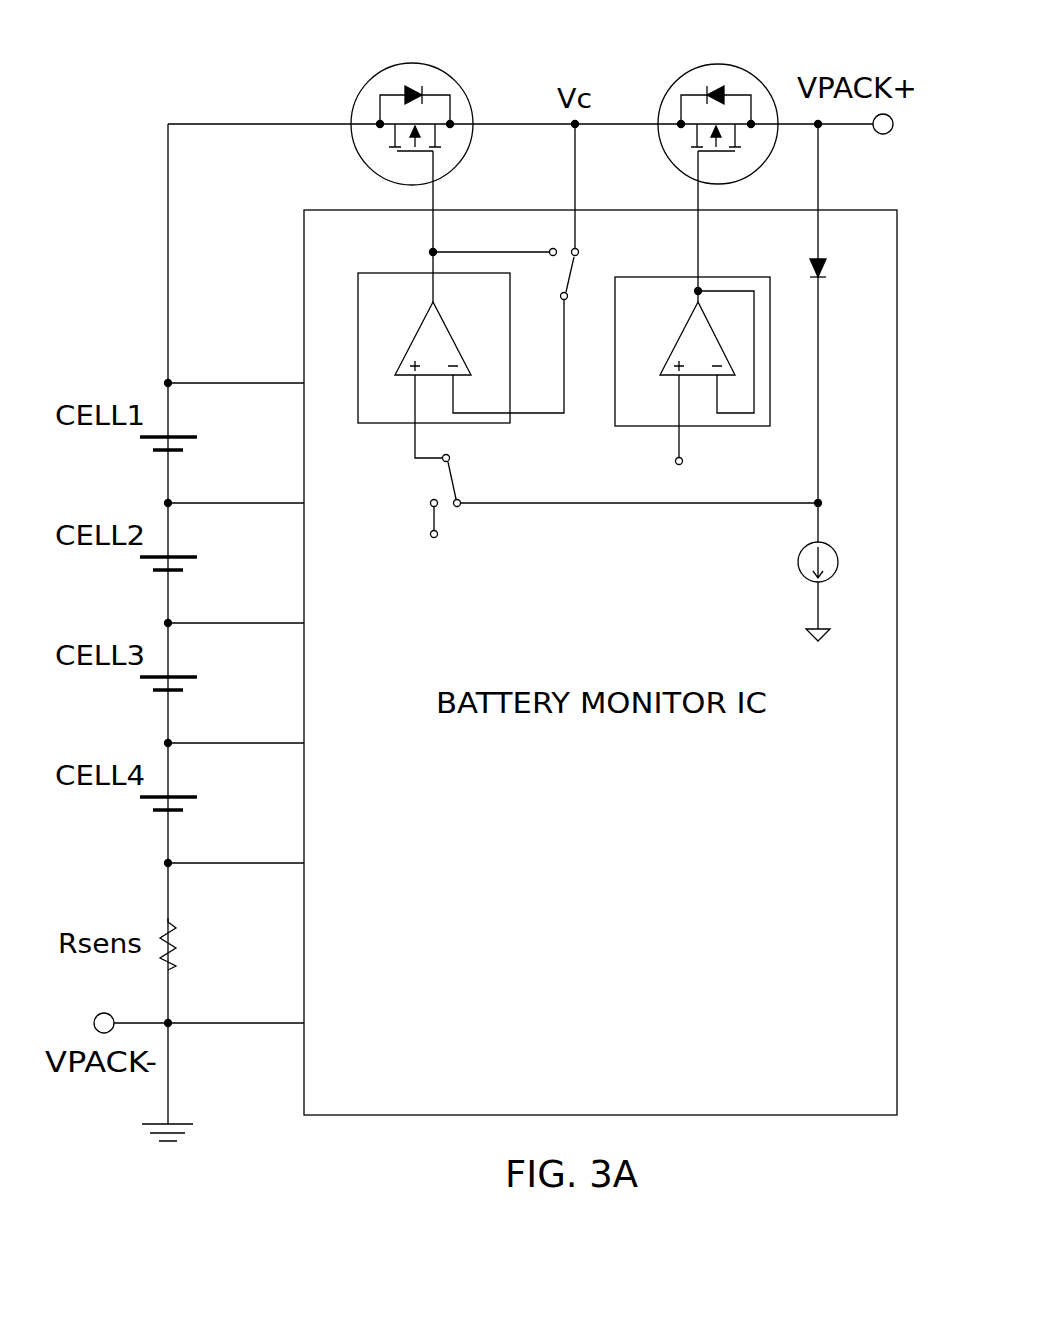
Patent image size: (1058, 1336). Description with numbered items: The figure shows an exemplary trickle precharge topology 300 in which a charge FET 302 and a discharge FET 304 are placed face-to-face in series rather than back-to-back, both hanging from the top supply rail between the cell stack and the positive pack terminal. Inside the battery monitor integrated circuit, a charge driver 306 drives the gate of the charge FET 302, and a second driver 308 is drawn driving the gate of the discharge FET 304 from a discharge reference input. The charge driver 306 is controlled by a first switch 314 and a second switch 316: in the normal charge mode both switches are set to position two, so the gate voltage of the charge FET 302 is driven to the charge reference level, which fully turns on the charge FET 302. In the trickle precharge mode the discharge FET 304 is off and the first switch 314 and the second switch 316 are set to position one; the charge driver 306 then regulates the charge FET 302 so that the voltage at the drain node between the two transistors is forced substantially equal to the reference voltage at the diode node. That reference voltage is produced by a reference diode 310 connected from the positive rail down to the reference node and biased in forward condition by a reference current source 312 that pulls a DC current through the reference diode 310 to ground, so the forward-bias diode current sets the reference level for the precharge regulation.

The trickle precharge topology 300 is at (178, 88).
The charge FET 302 is at (437, 64).
The discharge FET 304 is at (742, 64).
The charge driver 306 is at (395, 425).
The discharge amplifier 308 is at (710, 427).
The reference diode D1 310 is at (827, 267).
The reference current source 312 is at (800, 572).
The switch K1 314 is at (566, 243).
The switch K2 316 is at (452, 509).